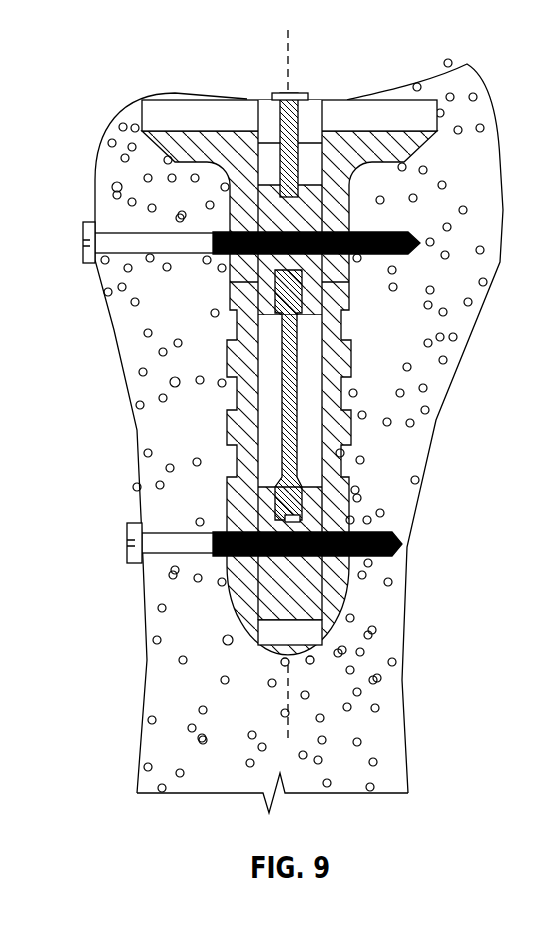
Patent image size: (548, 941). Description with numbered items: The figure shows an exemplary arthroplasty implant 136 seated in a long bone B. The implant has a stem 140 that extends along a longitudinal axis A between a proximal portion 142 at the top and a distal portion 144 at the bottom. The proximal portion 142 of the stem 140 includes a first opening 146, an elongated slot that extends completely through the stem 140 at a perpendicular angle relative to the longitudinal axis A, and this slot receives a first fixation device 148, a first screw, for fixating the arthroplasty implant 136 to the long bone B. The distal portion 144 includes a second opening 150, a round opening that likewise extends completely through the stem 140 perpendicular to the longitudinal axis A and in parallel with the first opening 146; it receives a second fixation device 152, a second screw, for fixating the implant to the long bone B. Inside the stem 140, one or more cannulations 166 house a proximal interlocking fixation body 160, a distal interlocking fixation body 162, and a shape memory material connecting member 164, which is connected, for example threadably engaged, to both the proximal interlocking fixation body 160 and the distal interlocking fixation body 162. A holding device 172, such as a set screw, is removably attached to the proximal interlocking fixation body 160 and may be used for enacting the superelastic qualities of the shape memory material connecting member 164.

The arthroplasty implant 136 is at (393, 31).
The stem 140 is at (230, 298).
The proximal portion 142 is at (383, 188).
The distal portion 144 is at (354, 608).
The first opening 146 is at (372, 222).
The first fixation device 148 is at (130, 230).
The second opening 150 is at (220, 530).
The second fixation device 152 is at (165, 545).
The proximal interlocking fixation body 160 is at (321, 150).
The distal interlocking fixation body 162 is at (285, 610).
The shape memory material connecting member 164 is at (280, 372).
The cannulation 166 is at (312, 348).
The holding device 172 is at (270, 97).
The longitudinal axis A is at (285, 32).
The long bone B is at (412, 423).